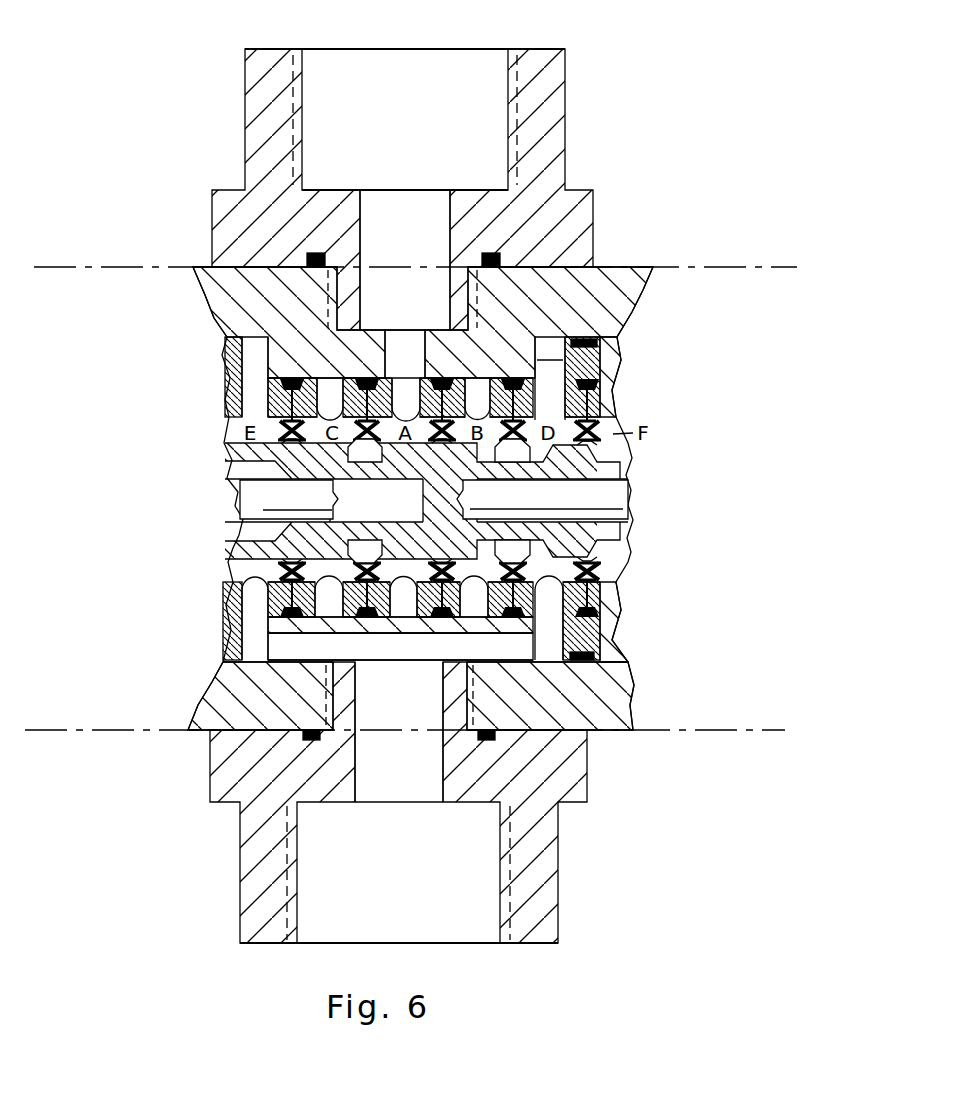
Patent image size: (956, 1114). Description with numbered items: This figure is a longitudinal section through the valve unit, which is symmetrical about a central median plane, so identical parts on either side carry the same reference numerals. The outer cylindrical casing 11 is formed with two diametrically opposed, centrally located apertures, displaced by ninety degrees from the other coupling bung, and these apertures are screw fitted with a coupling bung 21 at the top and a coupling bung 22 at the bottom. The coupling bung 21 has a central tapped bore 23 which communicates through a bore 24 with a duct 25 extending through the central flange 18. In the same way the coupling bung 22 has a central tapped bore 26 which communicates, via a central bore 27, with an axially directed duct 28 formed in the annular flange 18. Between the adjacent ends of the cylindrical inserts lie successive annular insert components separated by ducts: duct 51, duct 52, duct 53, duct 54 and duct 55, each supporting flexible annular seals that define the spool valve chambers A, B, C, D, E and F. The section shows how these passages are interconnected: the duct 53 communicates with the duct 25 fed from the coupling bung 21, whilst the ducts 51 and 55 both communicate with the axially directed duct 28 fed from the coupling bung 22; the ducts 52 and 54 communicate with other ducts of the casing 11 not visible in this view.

The outer cylindrical casing 11 is at (617, 270).
The central flange 18 is at (603, 364).
The coupling bung 21 is at (568, 124).
The coupling bung 22 is at (560, 881).
The central tapped bore 23 is at (509, 116).
The bore 24 is at (392, 276).
The duct 25 is at (392, 366).
The central tapped bore 26 is at (298, 907).
The central bore 27 is at (384, 739).
The axially directed duct 28 is at (384, 661).
The duct 51 is at (252, 379).
The duct 52 is at (332, 392).
The duct 53 is at (407, 403).
The duct 54 is at (478, 395).
The duct 55 is at (548, 391).